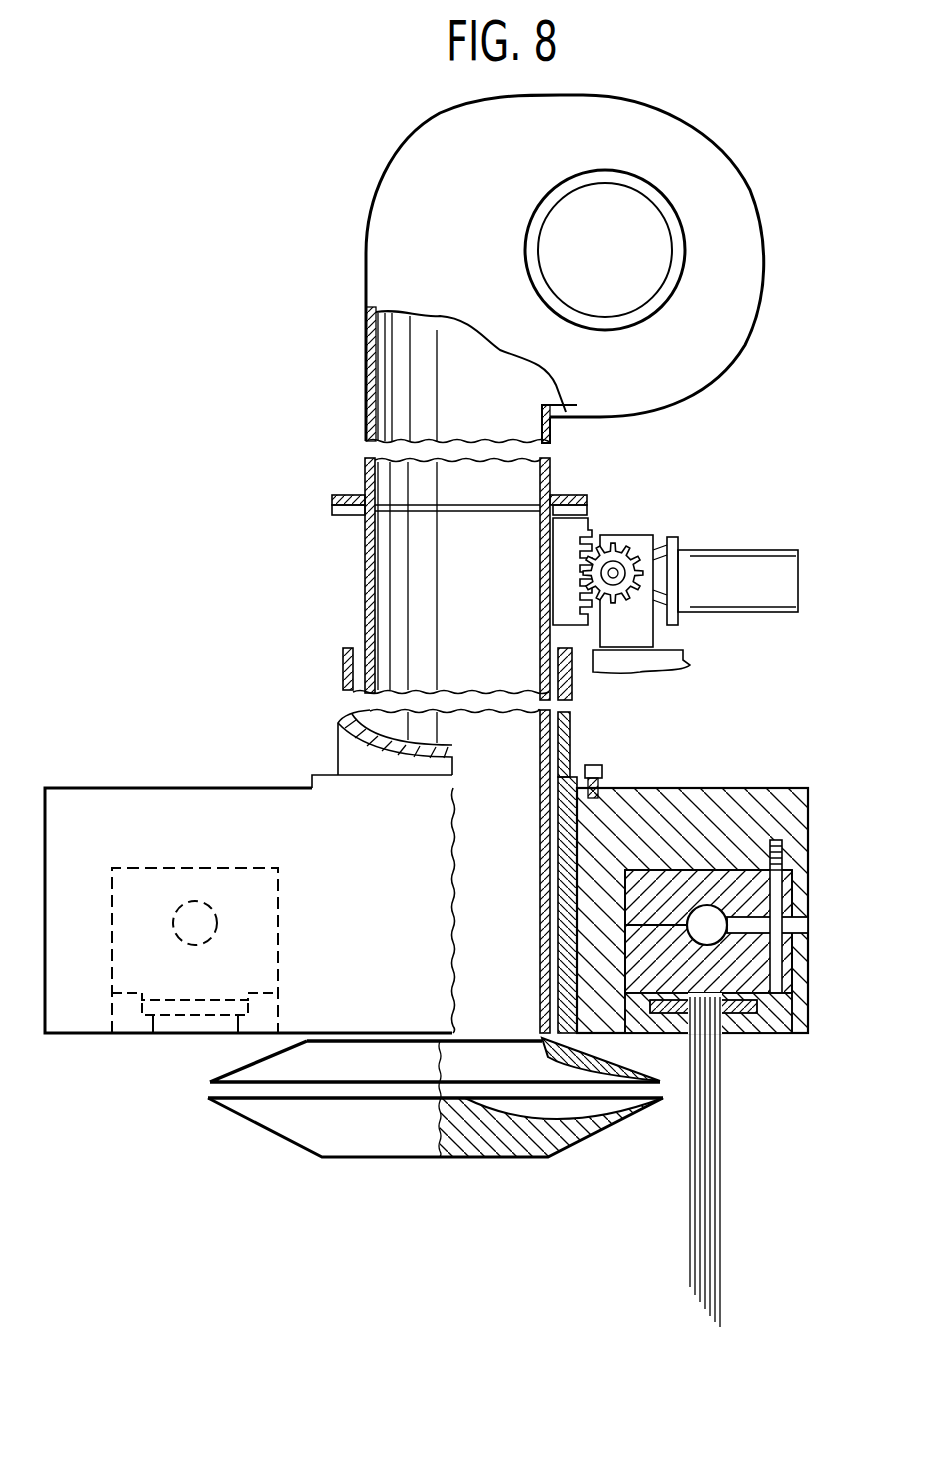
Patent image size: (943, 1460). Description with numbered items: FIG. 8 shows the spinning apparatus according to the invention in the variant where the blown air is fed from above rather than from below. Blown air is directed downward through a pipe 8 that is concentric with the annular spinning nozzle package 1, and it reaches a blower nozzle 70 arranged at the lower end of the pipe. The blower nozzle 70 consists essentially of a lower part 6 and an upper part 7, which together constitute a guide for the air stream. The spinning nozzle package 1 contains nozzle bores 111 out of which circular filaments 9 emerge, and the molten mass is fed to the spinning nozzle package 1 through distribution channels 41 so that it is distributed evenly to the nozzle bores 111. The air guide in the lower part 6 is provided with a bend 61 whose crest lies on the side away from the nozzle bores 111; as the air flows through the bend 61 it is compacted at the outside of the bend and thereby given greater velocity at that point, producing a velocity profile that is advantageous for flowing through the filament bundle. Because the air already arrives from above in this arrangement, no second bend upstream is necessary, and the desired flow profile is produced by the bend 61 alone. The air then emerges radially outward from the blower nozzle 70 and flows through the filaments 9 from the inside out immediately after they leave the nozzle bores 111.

The spinning nozzle package 1 is at (750, 967).
The lower part 6 is at (435, 1141).
The upper part 7 is at (298, 1068).
The pipe 8 is at (402, 551).
The filaments 9 is at (720, 1142).
The distribution channels 41 is at (707, 905).
The bend 61 is at (562, 1124).
The blower nozzle 70 is at (420, 1141).
The nozzle bores 111 is at (728, 1037).